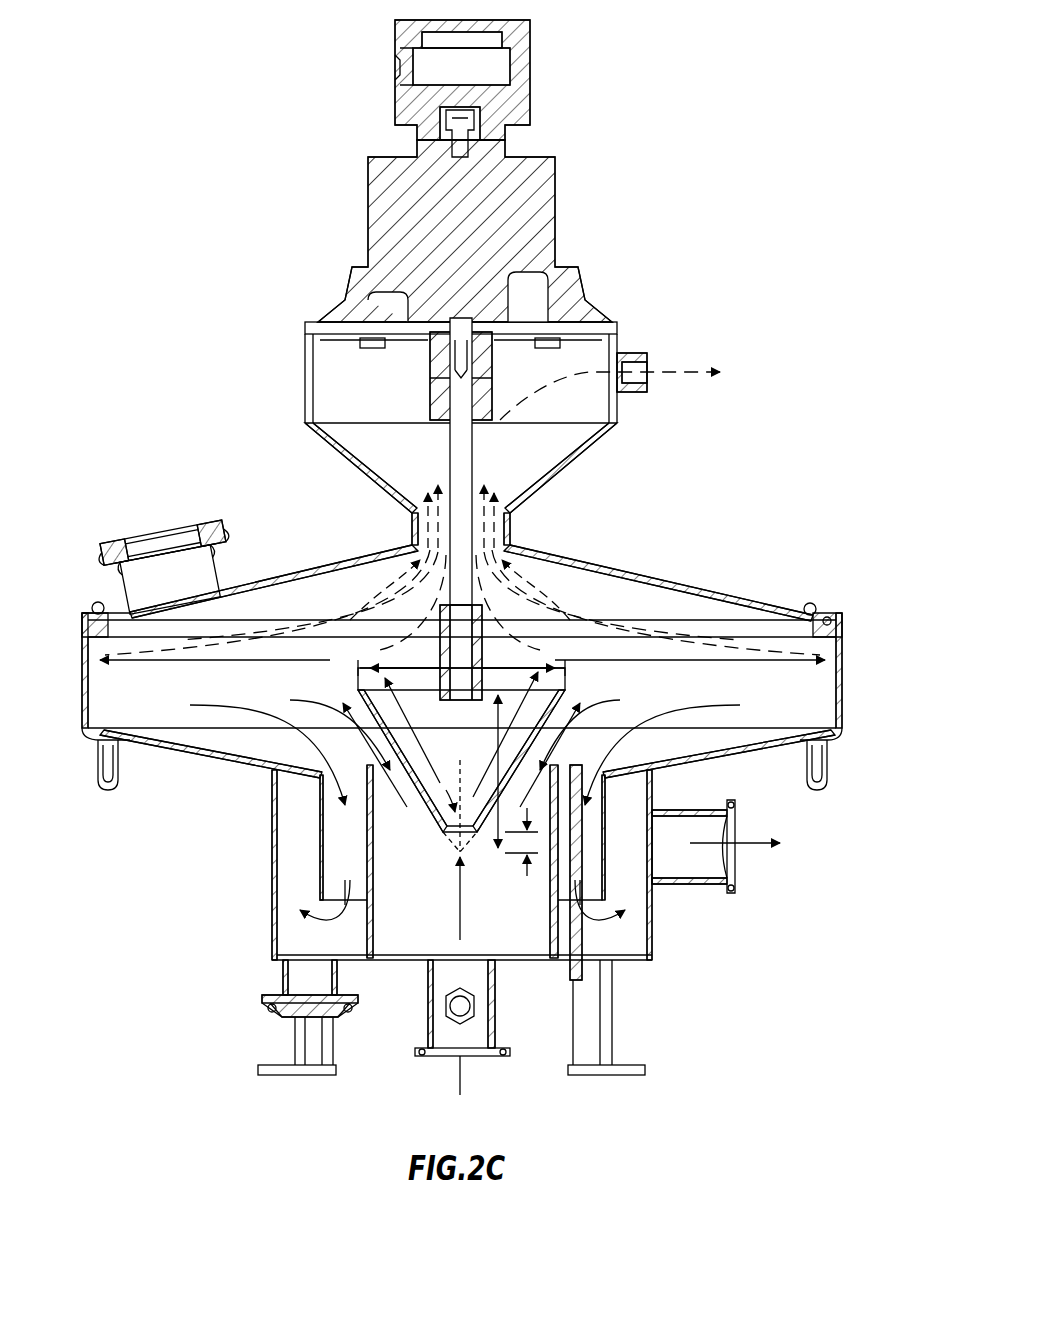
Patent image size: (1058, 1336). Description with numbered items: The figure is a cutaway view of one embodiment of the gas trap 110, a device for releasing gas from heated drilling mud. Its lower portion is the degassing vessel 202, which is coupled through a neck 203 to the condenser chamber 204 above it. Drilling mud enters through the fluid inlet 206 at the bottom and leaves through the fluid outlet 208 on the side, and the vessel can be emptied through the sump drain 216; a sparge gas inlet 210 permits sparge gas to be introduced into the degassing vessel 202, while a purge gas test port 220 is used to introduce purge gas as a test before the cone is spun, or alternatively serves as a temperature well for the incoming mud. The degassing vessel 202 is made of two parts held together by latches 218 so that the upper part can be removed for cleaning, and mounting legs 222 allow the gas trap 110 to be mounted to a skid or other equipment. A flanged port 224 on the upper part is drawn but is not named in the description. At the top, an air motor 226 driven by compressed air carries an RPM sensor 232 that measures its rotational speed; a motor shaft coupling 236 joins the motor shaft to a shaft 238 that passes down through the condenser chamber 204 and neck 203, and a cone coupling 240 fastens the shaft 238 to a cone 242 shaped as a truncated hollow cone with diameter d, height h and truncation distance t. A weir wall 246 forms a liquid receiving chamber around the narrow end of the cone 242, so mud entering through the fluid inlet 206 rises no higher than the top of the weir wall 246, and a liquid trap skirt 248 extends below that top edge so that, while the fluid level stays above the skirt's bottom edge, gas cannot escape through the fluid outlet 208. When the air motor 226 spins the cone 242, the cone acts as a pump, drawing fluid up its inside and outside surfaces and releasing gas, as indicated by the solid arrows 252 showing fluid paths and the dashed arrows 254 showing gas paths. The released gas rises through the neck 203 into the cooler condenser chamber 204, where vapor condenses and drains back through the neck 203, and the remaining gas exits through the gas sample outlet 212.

The gas trap 110 is at (706, 183).
The RPM sensor 232 is at (532, 58).
The air motor 226 is at (558, 218).
The gas sample outlet 212 is at (640, 352).
The motor shaft coupling 236 is at (430, 398).
The shaft 238 is at (472, 471).
The condenser chamber 204 is at (585, 470).
The neck 203 is at (512, 523).
The inlet nozzle 224 is at (192, 520).
The dashed arrows 254 is at (583, 600).
The degassing vessel 202 is at (742, 600).
The cone coupling 240 is at (440, 660).
The cone 242 is at (560, 700).
The latches 218 is at (105, 792).
The liquid trap skirt 248 is at (320, 866).
The weir wall 246 is at (365, 863).
The fluid outlet 208 is at (692, 886).
The sump drain 216 is at (282, 976).
The purge gas test port 220 is at (472, 1006).
The fluid inlet 206 is at (490, 1023).
The sparge gas inlet 210 is at (584, 969).
The solid arrows 252 is at (462, 1072).
The mounting legs 222 is at (285, 1076).